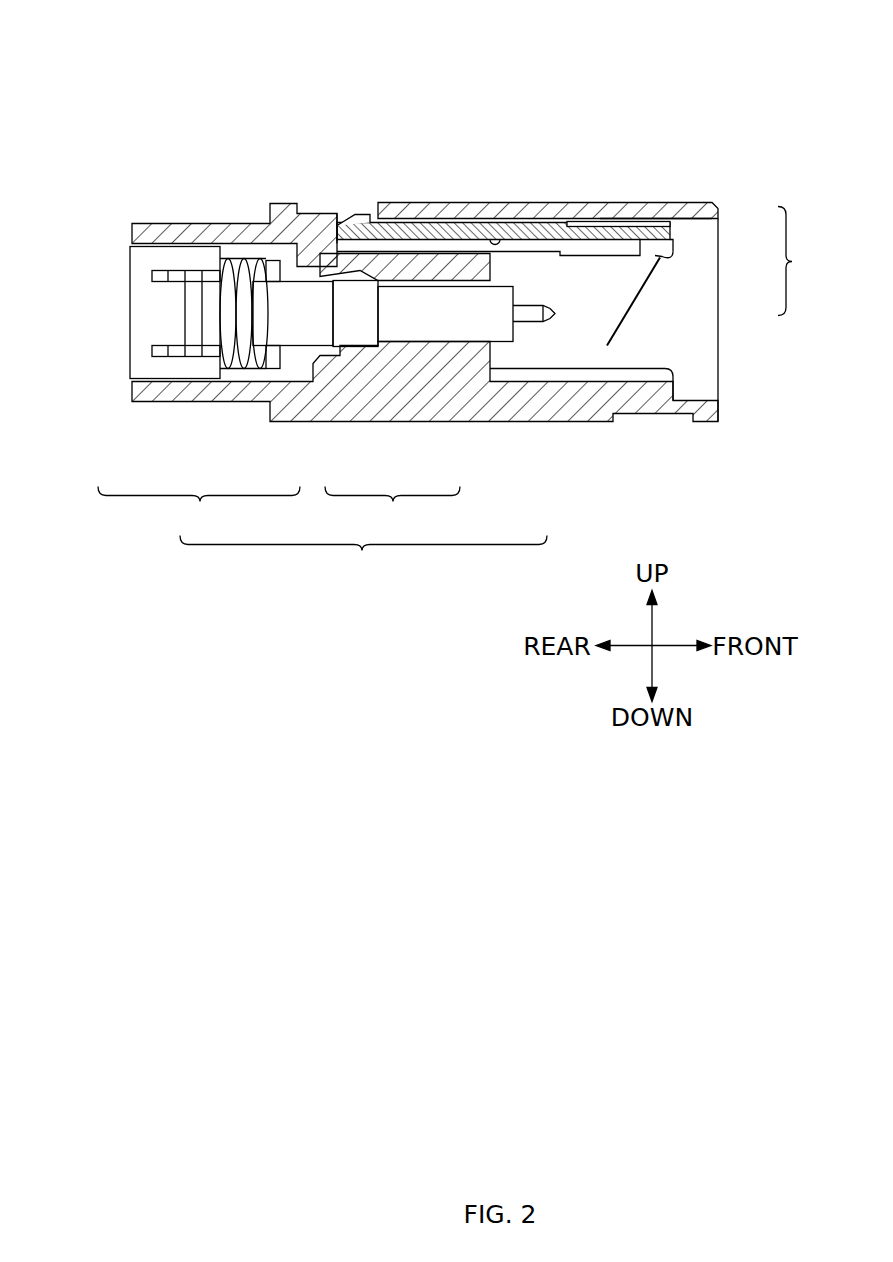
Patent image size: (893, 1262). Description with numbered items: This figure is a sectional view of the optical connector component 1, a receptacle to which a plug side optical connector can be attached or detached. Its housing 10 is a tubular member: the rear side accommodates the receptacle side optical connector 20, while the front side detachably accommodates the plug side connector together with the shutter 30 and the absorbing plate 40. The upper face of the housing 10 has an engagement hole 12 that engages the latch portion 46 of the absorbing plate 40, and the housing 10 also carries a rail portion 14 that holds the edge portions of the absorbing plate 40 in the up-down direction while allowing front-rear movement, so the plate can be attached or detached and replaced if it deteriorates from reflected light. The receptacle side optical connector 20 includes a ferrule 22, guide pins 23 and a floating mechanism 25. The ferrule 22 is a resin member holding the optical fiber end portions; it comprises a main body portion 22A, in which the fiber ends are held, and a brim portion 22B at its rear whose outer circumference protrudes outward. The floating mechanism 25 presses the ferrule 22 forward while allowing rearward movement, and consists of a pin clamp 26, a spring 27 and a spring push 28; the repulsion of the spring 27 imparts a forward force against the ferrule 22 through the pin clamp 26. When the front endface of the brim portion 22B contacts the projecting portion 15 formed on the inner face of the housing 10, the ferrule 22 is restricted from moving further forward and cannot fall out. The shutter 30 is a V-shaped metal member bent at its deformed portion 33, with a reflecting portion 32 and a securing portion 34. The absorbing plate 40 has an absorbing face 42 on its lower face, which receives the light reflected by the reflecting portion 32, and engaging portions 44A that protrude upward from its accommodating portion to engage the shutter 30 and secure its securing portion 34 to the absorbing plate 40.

The optical connector component 1 is at (605, 103).
The housing 10 is at (445, 207).
The engagement hole 12 is at (365, 200).
The rail portion 14 is at (642, 218).
The projecting portion 15 is at (390, 280).
The receptacle side optical connector 20 is at (363, 559).
The ferrule 22 is at (392, 509).
The main body portion 22A is at (440, 325).
The brim portion 22B is at (360, 330).
The guide pins 23 is at (533, 316).
The floating mechanism 25 is at (199, 510).
The pin clamp 26 is at (293, 325).
The spring 27 is at (230, 349).
The spring push 28 is at (137, 327).
The shutter 30 is at (804, 261).
The reflecting portion 32 is at (637, 305).
The deformed portion 33 is at (662, 259).
The securing portion 34 is at (670, 224).
The absorbing plate 40 is at (527, 228).
The absorbing face 42 is at (497, 243).
The engaging portions 44A is at (595, 227).
The latch portion 46 is at (353, 217).